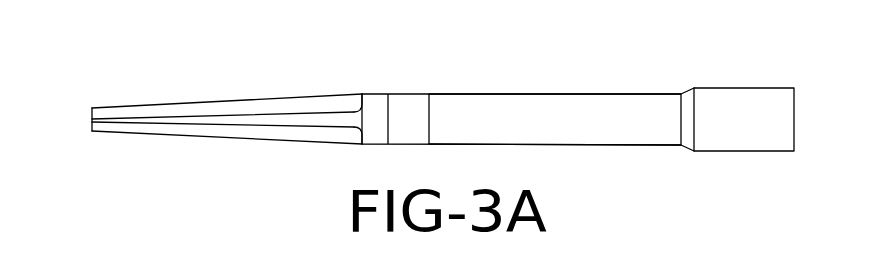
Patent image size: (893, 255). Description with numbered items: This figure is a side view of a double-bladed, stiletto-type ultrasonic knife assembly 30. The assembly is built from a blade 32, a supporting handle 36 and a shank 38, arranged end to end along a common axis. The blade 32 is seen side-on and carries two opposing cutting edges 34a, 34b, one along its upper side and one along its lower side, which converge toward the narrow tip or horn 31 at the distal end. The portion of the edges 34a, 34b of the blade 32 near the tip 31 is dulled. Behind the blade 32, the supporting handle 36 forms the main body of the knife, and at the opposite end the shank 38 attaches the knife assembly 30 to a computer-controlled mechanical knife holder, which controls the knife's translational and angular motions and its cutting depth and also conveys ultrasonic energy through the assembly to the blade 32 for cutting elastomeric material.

The ultrasonic knife assembly 30 is at (444, 104).
The tip 31 is at (92, 118).
The blade 32 is at (202, 103).
The cutting edge 34a is at (212, 102).
The cutting edge 34b is at (253, 139).
The supporting handle 36 is at (628, 117).
The shank 38 is at (735, 140).